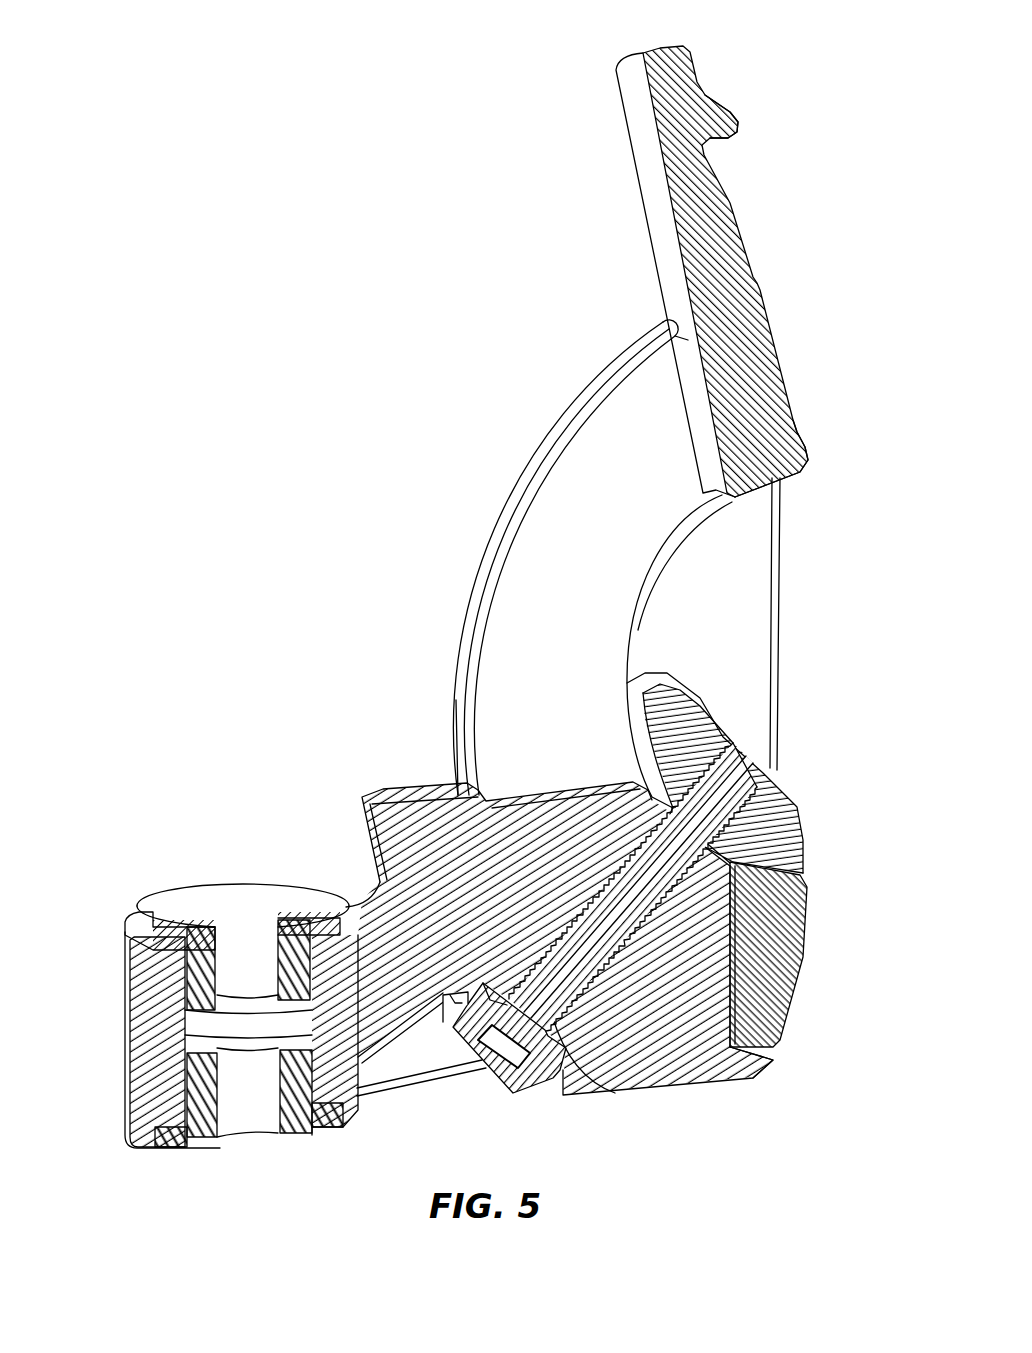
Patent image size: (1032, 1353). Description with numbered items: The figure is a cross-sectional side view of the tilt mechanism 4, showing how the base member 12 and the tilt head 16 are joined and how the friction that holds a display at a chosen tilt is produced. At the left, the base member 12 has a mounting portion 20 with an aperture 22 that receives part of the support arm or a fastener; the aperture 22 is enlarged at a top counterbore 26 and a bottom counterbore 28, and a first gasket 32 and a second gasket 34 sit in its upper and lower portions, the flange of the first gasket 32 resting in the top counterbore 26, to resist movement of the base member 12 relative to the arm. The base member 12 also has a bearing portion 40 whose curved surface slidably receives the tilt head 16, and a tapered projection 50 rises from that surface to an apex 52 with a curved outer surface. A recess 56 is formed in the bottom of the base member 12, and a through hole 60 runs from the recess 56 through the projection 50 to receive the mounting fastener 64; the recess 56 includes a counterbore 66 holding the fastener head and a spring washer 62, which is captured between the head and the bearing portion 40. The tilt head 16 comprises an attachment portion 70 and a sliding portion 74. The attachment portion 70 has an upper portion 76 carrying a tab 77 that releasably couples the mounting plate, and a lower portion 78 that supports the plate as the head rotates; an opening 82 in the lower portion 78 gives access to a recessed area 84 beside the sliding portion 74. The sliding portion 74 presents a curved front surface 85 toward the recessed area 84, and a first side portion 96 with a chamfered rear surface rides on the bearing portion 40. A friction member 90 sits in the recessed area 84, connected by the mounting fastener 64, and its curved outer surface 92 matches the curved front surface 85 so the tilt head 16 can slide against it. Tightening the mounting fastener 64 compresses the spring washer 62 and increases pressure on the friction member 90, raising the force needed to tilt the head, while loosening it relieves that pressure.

The assembly 4 is at (238, 430).
The base member 12 is at (100, 977).
The tilt head 16 is at (562, 356).
The mounting portion 20 is at (160, 1097).
The aperture 22 is at (195, 1040).
The top counterbore 26 is at (147, 943).
The bottom counterbore 28 is at (165, 1120).
The first gasket 32 is at (232, 897).
The second gasket 34 is at (322, 1105).
The bearing portion 40 is at (663, 1020).
The projection 50 is at (557, 833).
The apex 52 is at (737, 895).
The recess 56 is at (400, 1062).
The through hole 60 is at (650, 920).
The spring washer 62 is at (563, 1090).
The mounting fastener 64 is at (556, 1063).
The counterbore 66 is at (476, 990).
The attachment portion 70 is at (788, 447).
The sliding portion 74 is at (547, 487).
The upper portion 76 is at (725, 243).
The tab 77 is at (715, 125).
The lower portion 78 is at (773, 1017).
The opening 82 is at (755, 624).
The recessed area 84 is at (730, 573).
The curved front surface 85 is at (700, 552).
The friction member 90 is at (773, 802).
The curved outer surface 92 is at (643, 722).
The first side portion 96 is at (507, 640).